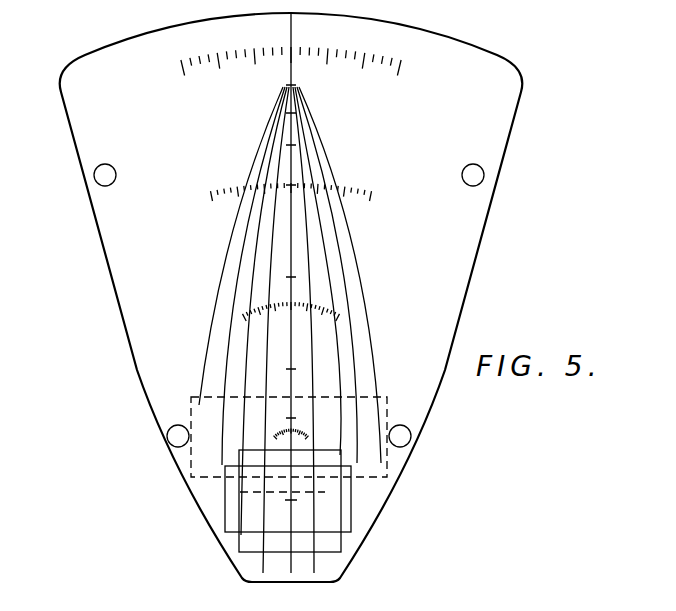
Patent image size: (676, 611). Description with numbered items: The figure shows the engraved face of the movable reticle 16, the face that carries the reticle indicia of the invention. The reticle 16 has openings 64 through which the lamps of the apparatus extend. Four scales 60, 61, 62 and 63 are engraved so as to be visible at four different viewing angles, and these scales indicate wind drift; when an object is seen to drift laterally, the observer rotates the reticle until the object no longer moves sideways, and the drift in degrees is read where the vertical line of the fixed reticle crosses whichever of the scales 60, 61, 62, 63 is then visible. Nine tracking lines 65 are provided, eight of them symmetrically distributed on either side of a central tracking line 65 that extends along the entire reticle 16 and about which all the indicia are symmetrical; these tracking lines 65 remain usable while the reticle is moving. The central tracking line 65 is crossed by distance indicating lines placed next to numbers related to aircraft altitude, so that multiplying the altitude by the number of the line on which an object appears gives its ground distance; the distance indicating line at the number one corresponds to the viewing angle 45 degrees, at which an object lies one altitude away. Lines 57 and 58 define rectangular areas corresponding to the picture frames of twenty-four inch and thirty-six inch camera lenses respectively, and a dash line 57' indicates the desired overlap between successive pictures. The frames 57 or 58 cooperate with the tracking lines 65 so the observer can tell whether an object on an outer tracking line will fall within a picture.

The reticle 16 is at (418, 392).
The 45 degree reference axis marking 45 is at (295, 268).
The lines defining rectangular area 57 is at (260, 518).
The dash line 57' is at (319, 458).
The lines defining rectangular area 58 is at (351, 518).
The scale 60 is at (399, 69).
The scale 61 is at (373, 190).
The scale 62 is at (241, 313).
The scale 63 is at (270, 436).
The openings 64 is at (95, 180).
The tracking lines 65 is at (284, 84).